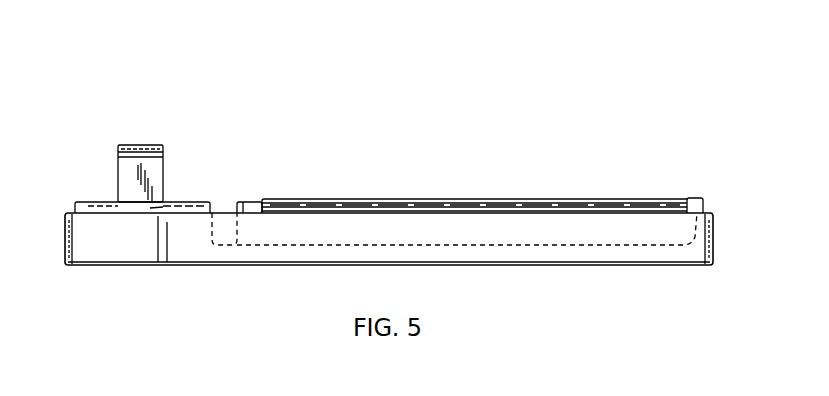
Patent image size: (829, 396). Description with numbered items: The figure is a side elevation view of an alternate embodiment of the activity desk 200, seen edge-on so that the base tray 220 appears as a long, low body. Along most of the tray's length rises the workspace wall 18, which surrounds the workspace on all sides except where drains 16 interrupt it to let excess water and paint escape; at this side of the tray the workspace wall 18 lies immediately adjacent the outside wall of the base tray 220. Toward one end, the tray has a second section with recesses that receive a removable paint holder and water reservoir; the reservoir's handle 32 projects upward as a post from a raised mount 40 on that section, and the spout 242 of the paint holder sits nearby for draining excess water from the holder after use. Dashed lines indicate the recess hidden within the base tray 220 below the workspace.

The drain 16 is at (254, 198).
The workspace wall 18 is at (604, 199).
The handle 32 is at (140, 145).
The platform 40 is at (86, 202).
The activity desk 200 is at (448, 196).
The base tray 220 is at (703, 210).
The spout 242 is at (150, 210).